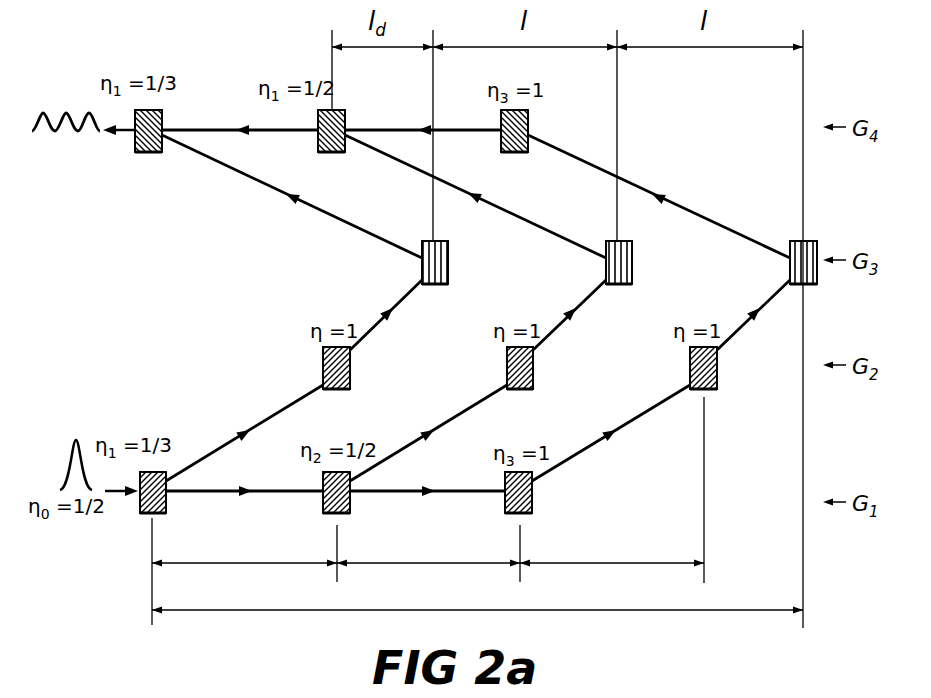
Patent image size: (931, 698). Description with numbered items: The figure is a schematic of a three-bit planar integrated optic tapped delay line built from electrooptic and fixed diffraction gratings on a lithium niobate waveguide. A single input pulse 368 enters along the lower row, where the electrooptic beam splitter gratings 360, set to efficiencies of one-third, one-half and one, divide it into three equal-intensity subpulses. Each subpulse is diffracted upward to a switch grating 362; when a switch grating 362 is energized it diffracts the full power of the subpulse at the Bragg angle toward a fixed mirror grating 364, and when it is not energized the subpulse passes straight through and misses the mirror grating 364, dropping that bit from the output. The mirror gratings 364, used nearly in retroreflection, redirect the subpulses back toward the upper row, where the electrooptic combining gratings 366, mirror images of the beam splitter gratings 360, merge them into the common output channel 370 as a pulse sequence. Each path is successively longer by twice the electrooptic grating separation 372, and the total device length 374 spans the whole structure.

The electrooptic beam splitter gratings 360 is at (158, 471).
The switch gratings 362 is at (323, 362).
The fixed mirror gratings 364 is at (448, 260).
The electrooptic combining gratings 366 is at (162, 115).
The input pulse 368 is at (115, 493).
The output channel 370 is at (126, 133).
The electrooptic grating separation 372 is at (428, 511).
The total device length 374 is at (477, 599).